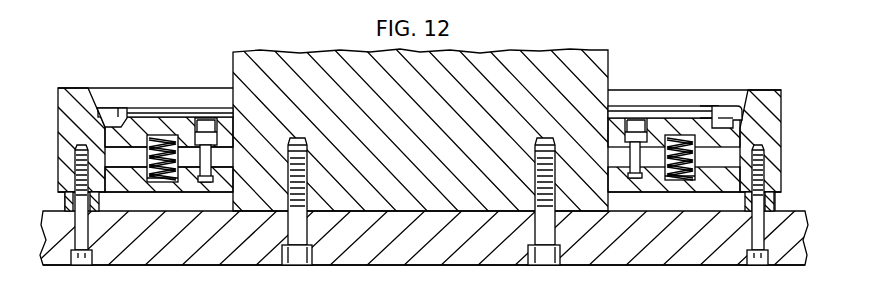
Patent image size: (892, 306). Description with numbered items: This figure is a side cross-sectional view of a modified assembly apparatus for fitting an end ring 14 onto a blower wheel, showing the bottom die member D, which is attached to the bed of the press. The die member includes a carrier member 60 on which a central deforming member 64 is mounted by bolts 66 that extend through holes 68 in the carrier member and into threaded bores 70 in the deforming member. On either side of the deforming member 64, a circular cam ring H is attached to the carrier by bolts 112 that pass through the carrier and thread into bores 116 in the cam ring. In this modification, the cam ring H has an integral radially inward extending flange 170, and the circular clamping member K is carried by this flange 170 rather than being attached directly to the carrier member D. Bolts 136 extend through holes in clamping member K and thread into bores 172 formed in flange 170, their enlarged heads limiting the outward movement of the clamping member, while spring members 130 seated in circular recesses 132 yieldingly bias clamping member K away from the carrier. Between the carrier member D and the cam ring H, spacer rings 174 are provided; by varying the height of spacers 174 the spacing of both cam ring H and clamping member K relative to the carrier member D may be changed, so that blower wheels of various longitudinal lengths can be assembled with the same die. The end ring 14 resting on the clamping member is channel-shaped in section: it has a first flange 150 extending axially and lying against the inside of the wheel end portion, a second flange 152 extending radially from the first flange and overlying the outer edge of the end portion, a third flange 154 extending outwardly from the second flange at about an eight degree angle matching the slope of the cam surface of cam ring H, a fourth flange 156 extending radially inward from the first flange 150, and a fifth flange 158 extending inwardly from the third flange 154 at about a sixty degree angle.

The cam ring H is at (67, 88).
The clamping member K is at (190, 107).
The bottom die member D is at (443, 266).
The end ring 14 is at (625, 108).
The carrier member 60 is at (386, 258).
The deforming member 64 is at (513, 56).
The bolt 66 is at (301, 259).
The hole 68 is at (283, 259).
The threaded bore 70 is at (300, 160).
The bolt 112 is at (80, 266).
The threaded bore 116 is at (73, 166).
The spring member 130 is at (163, 182).
The circular recess 132 is at (182, 108).
The bolt 136 is at (217, 137).
The first flange 150 is at (166, 136).
The second flange 152 is at (116, 110).
The third flange 154 is at (729, 106).
The fourth flange 156 is at (710, 106).
The fifth flange 158 is at (103, 110).
The flange 170 is at (181, 183).
The bore 172 is at (205, 183).
The spacer ring 174 is at (67, 201).